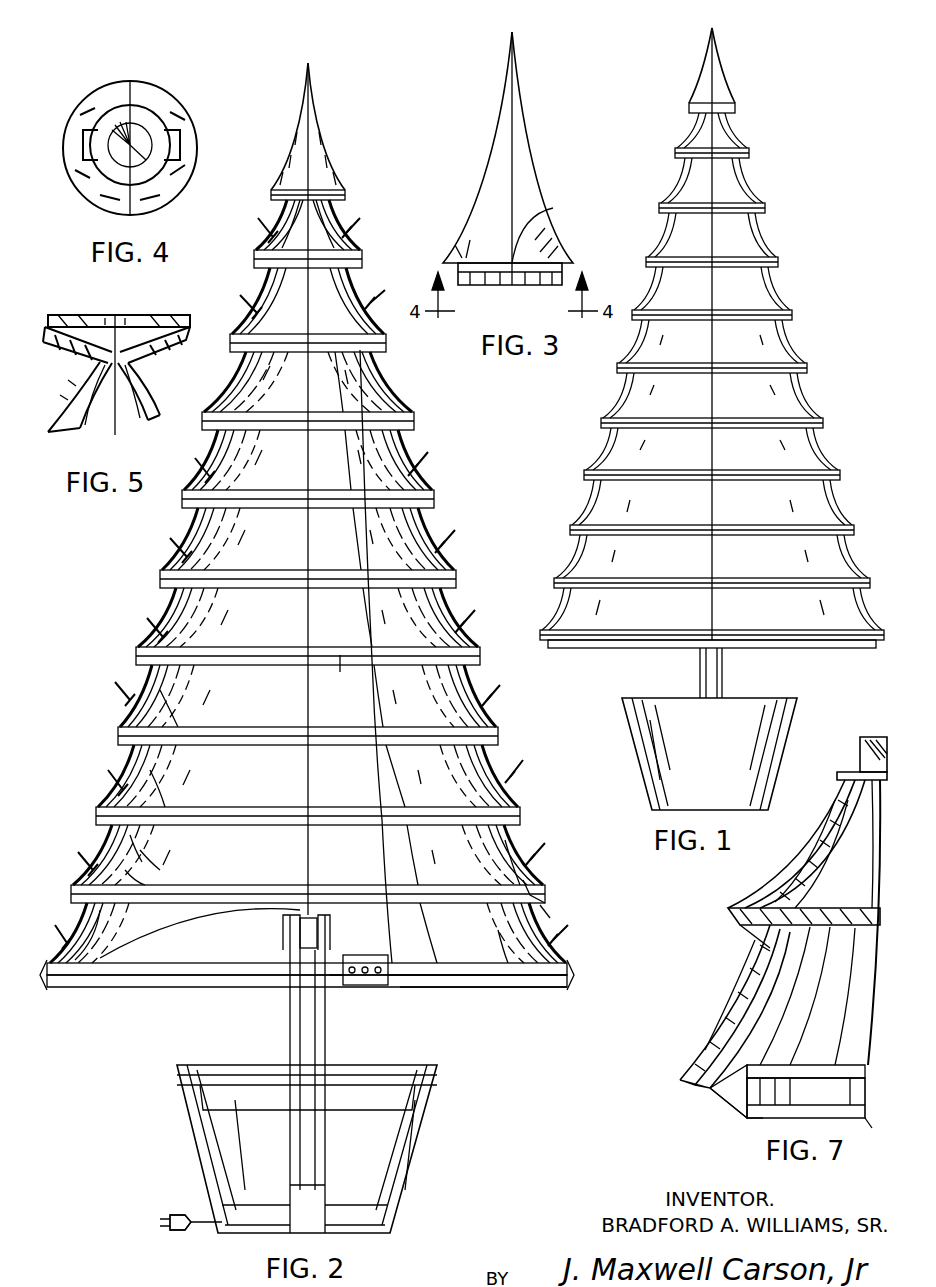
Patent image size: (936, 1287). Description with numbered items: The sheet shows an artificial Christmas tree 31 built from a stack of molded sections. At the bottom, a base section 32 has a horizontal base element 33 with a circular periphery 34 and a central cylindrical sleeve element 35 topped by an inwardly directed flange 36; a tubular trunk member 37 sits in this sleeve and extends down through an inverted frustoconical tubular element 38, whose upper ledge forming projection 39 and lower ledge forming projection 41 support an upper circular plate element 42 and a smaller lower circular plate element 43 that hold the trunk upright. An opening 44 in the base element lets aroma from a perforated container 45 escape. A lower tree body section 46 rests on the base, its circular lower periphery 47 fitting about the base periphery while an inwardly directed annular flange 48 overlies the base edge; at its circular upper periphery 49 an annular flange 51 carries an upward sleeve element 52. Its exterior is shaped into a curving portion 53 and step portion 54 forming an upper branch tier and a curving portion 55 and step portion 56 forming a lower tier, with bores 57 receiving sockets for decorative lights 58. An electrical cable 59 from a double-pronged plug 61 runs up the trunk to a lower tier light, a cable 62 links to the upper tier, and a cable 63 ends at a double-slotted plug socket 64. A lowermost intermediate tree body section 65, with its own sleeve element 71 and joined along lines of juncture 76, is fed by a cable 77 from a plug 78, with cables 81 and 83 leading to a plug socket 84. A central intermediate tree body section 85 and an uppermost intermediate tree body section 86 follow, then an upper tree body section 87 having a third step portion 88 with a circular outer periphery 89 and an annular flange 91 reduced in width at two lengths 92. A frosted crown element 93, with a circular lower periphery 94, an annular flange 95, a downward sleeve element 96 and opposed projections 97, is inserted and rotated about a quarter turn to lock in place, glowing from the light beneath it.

In FIG. 1, the artificial Christmas tree 31 is at (812, 295).
In FIG. 1, the base section 32 is at (620, 742).
In FIG. 2, the base section 32 is at (422, 1153).
In FIG. 1, the base element 33 is at (766, 650).
In FIG. 2, the base element 33 is at (190, 990).
In FIG. 7, the base element 33 is at (865, 1120).
In FIG. 1, the circular periphery 34 is at (560, 645).
In FIG. 2, the circular periphery 34 is at (72, 978).
In FIG. 7, the circular periphery 34 is at (738, 1120).
In FIG. 2, the cylindrical sleeve element 35 is at (284, 935).
In FIG. 2, the inwardly directed flange 36 is at (320, 916).
In FIG. 1, the trunk member 37 is at (700, 676).
In FIG. 2, the trunk member 37 is at (290, 1012).
In FIG. 1, the tubular element 38 is at (662, 770).
In FIG. 2, the tubular element 38 is at (200, 1152).
In FIG. 2, the upper ledge forming projection 39 is at (222, 1096).
In FIG. 2, the lower ledge forming projection 41 is at (356, 1206).
In FIG. 2, the upper circular plate element 42 is at (346, 1072).
In FIG. 2, the lower circular plate element 43 is at (250, 1210).
In FIG. 2, the opening 44 is at (410, 990).
In FIG. 2, the perforated container 45 is at (366, 956).
In FIG. 1, the lower tree body section 46 is at (568, 576).
In FIG. 2, the lower tree body section 46 is at (545, 888).
In FIG. 7, the lower tree body section 46 is at (730, 912).
In FIG. 2, the circular lower periphery 47 is at (456, 990).
In FIG. 7, the circular lower periphery 47 is at (732, 1106).
In FIG. 2, the inwardly directed annular flange 48 is at (172, 964).
In FIG. 7, the inwardly directed annular flange 48 is at (832, 1064).
In FIG. 7, the circular upper periphery 49 is at (840, 775).
In FIG. 7, the inwardly directed annular flange 51 is at (848, 770).
In FIG. 2, the sleeve element 52 is at (376, 656).
In FIG. 7, the sleeve element 52 is at (868, 737).
In FIG. 2, the downwardly and outwardly curving portion 53 is at (452, 846).
In FIG. 7, the downwardly and outwardly curving portion 53 is at (806, 841).
In FIG. 2, the step portion 54 is at (552, 916).
In FIG. 7, the step portion 54 is at (752, 933).
In FIG. 2, the downwardly and outwardly curving portion 55 is at (520, 960).
In FIG. 7, the downwardly and outwardly curving portion 55 is at (745, 990).
In FIG. 2, the step portion 56 is at (548, 978).
In FIG. 7, the step portion 56 is at (690, 1092).
In FIG. 1, the bores 57 is at (716, 607).
In FIG. 2, the bores 57 is at (316, 885).
In FIG. 7, the bores 57 is at (716, 1036).
In FIG. 2, the decorative Christmas tree light 58 is at (510, 778).
In FIG. 2, the electrical cable 59 is at (202, 1234).
In FIG. 2, the double-pronged plug 61 is at (170, 1218).
In FIG. 2, the electrical cable 62 is at (118, 902).
In FIG. 2, the electrical cable 63 is at (142, 882).
In FIG. 2, the double-slotted plug socket 64 is at (162, 866).
In FIG. 1, the lowermost intermediate tree body section 65 is at (586, 472).
In FIG. 2, the lowermost intermediate tree body section 65 is at (122, 732).
In FIG. 2, the sleeve element 71 is at (340, 676).
In FIG. 1, the lines of juncture 76 is at (716, 497).
In FIG. 2, the lines of juncture 76 is at (322, 762).
In FIG. 2, the electrical cable 77 is at (172, 810).
In FIG. 2, the double-pronged plug 78 is at (146, 846).
In FIG. 2, the electrical cable 81 is at (168, 782).
In FIG. 2, the electrical cable 83 is at (200, 723).
In FIG. 2, the double-slotted plug socket 84 is at (176, 702).
In FIG. 1, the central intermediate tree body section 85 is at (806, 366).
In FIG. 2, the central intermediate tree body section 85 is at (160, 579).
In FIG. 1, the uppermost intermediate tree body section 86 is at (779, 260).
In FIG. 2, the uppermost intermediate tree body section 86 is at (414, 417).
In FIG. 5, the upper tree body section 87 is at (135, 410).
In FIG. 1, the upper tree body section 87 is at (746, 150).
In FIG. 2, the upper tree body section 87 is at (360, 250).
In FIG. 5, the third step portion 88 is at (162, 348).
In FIG. 1, the third step portion 88 is at (698, 114).
In FIG. 2, the third step portion 88 is at (290, 196).
In FIG. 5, the circular outer periphery 89 is at (48, 345).
In FIG. 2, the circular outer periphery 89 is at (338, 192).
In FIG. 5, the annular flange 91 is at (70, 314).
In FIG. 5, the lengths 92 is at (128, 315).
In FIG. 4, the crown element 93 is at (136, 104).
In FIG. 3, the crown element 93 is at (522, 165).
In FIG. 1, the crown element 93 is at (718, 70).
In FIG. 2, the crown element 93 is at (313, 118).
In FIG. 4, the circular lower periphery 94 is at (120, 82).
In FIG. 4, the annular flange 95 is at (97, 188).
In FIG. 4, the sleeve element 96 is at (98, 122).
In FIG. 3, the sleeve element 96 is at (548, 226).
In FIG. 4, the projections 97 is at (77, 158).
In FIG. 3, the projections 97 is at (562, 256).